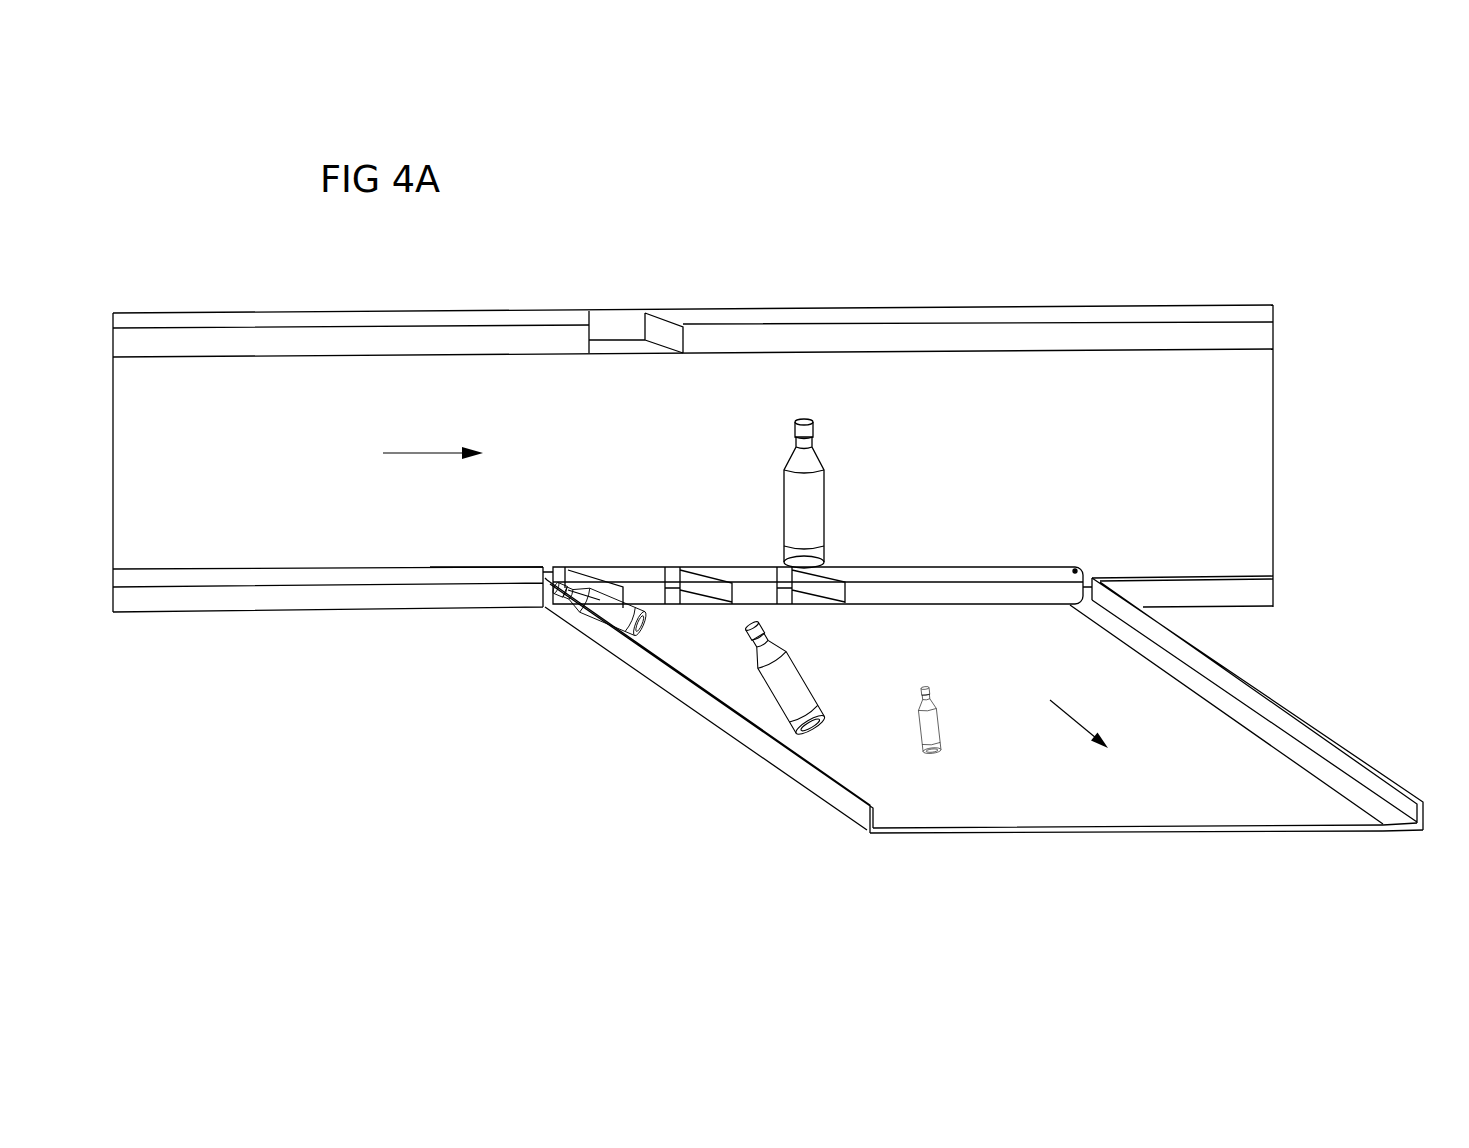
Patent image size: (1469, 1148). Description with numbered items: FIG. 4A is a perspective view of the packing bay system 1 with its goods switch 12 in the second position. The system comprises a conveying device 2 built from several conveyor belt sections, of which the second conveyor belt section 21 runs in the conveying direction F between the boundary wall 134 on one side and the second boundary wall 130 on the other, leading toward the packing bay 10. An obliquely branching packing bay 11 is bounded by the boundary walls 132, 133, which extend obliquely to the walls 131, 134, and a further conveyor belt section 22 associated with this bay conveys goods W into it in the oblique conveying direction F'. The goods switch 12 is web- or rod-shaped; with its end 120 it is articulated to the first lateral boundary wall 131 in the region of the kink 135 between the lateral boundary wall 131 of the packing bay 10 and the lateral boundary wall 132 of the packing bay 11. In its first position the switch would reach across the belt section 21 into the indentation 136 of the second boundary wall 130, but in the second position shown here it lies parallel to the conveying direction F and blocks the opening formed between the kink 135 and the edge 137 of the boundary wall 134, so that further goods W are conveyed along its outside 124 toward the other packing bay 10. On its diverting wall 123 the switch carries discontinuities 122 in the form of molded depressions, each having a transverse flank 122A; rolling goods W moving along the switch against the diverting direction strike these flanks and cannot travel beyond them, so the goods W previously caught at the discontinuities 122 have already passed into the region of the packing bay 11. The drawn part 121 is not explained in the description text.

The packing bay system 1 is at (961, 204).
The packing bay 10 is at (1252, 468).
The second boundary wall 130 is at (1110, 312).
The indentation 136 is at (651, 330).
The boundary wall 134 is at (275, 584).
The second conveyor belt section 21 is at (497, 549).
The conveying device 2 is at (402, 571).
The edge 137 is at (548, 602).
The goods switch 12 is at (1001, 568).
The outside 124 is at (949, 563).
The diverting wall 123 is at (931, 596).
The end 120 is at (1076, 570).
The first deflector 121 is at (613, 570).
The discontinuities 122 is at (598, 583).
The transverse flank 122A is at (672, 570).
The first lateral boundary wall 131 is at (1263, 599).
The kink 135 is at (1104, 581).
The boundary wall 132 is at (1331, 736).
The boundary wall 133 is at (848, 805).
The further conveyor belt section 22 is at (990, 806).
The packing bay 11 is at (1176, 804).
The goods W is at (809, 497).